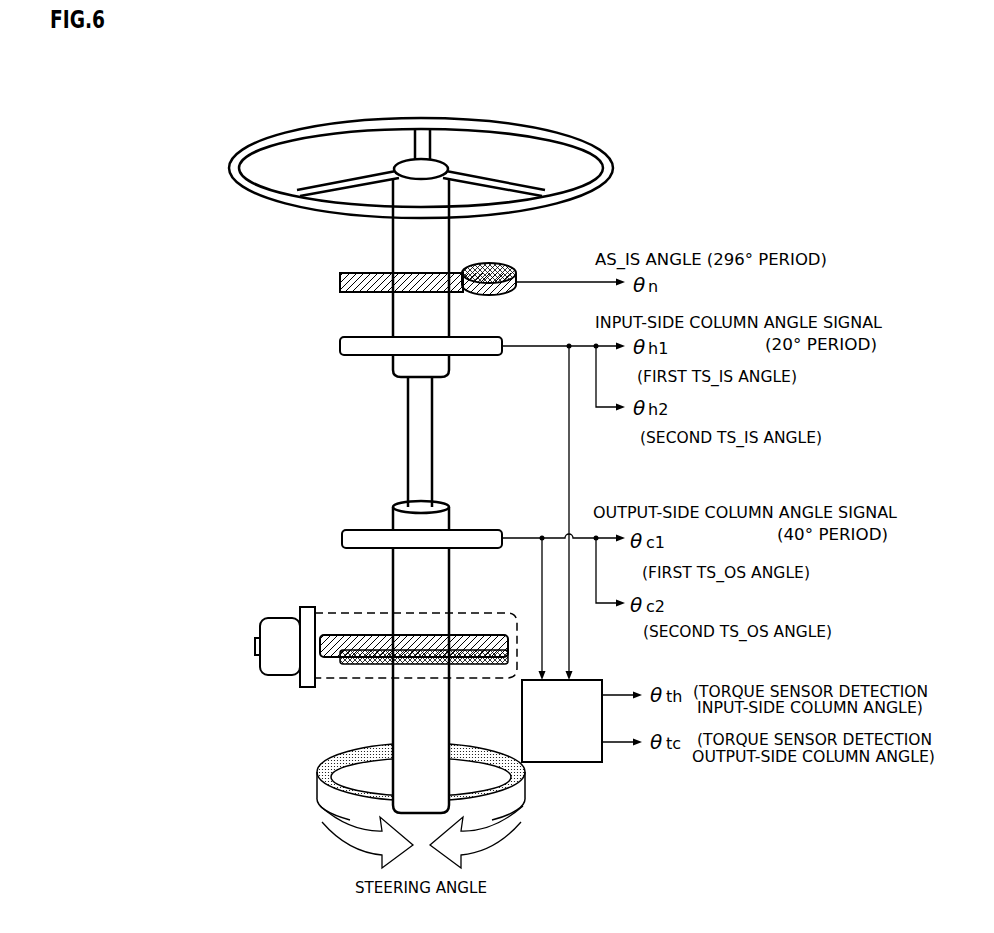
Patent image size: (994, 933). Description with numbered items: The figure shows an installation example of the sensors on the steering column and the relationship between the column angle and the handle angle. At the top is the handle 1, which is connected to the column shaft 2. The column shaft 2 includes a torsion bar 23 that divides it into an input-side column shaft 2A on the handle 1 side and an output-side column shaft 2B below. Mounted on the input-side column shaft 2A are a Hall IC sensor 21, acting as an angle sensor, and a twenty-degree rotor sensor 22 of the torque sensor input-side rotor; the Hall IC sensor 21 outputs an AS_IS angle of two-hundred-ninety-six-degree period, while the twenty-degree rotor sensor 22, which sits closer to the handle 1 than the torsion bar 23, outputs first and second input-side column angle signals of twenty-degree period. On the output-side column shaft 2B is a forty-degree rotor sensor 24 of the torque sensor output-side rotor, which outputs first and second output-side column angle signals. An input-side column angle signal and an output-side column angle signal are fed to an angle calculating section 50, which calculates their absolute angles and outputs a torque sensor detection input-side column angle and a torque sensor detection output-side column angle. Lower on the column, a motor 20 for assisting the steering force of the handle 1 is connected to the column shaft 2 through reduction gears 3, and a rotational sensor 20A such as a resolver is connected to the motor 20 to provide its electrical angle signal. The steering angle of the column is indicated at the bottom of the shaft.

The handle 1 is at (262, 134).
The column shaft 2 is at (262, 495).
The input-side column shaft 2A is at (449, 235).
The output-side column shaft 2B is at (449, 712).
The reduction gears 3 is at (355, 688).
The motor 20 is at (197, 633).
The rotational sensor 20A is at (255, 647).
The Hall IC sensor 21 is at (352, 265).
The 20° rotor sensor 22 is at (352, 330).
The torsion bar 23 is at (403, 429).
The 40° rotor sensor 24 is at (355, 525).
The angle calculating section 50 is at (578, 681).